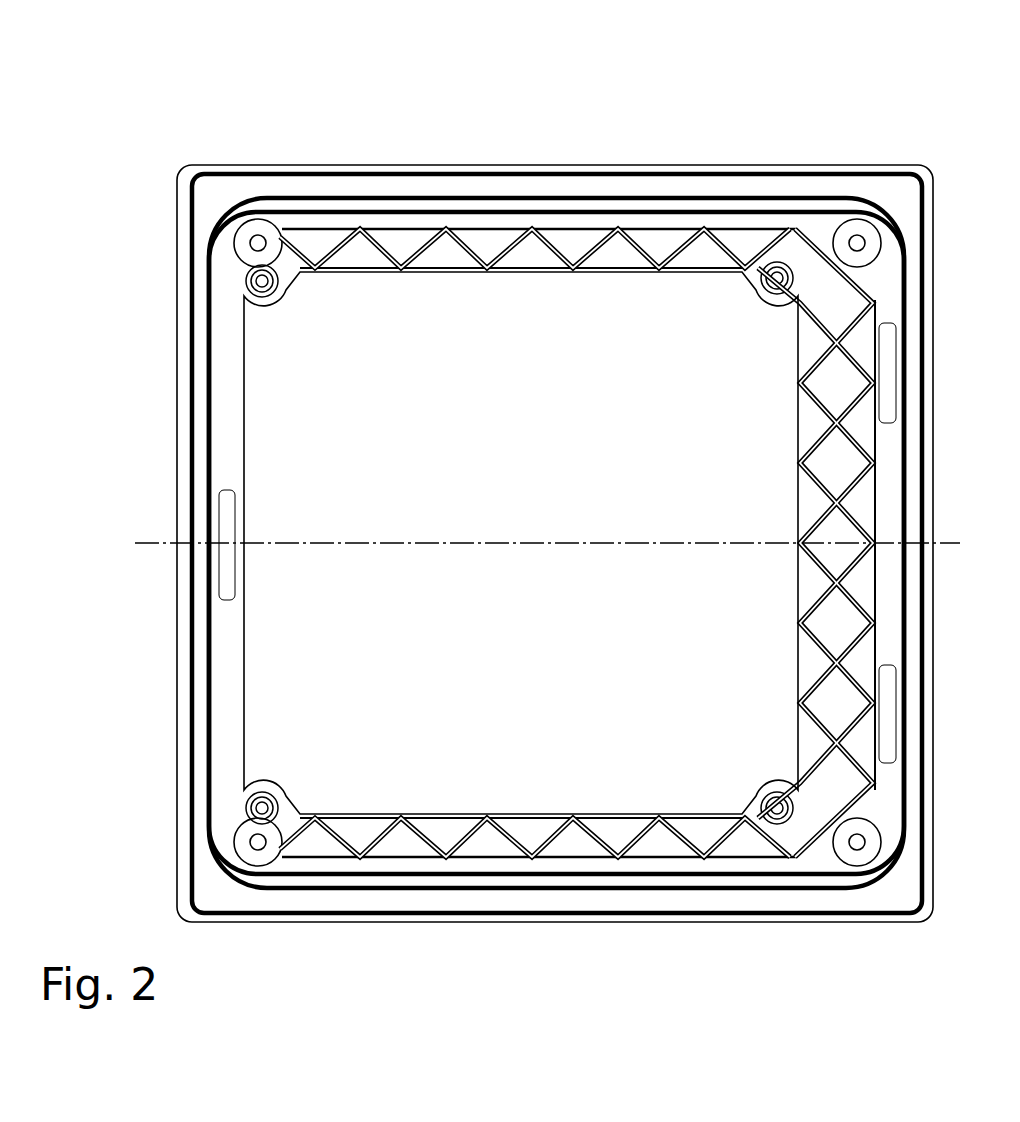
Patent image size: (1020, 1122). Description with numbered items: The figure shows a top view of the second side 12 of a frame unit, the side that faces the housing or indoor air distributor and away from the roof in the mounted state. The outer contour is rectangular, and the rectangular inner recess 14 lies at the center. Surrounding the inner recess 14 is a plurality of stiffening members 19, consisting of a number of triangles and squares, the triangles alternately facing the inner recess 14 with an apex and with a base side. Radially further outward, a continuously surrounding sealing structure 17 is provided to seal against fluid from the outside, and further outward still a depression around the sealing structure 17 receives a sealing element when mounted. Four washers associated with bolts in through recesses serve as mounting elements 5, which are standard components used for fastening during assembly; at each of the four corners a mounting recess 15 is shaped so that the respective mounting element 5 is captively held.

The second side 12 is at (323, 168).
The mounting element 5 is at (246, 229).
The mounting recess 15 is at (246, 283).
The sealing structure 17 is at (486, 196).
The stiffening member 19 is at (579, 240).
The inner recess 14 is at (537, 461).